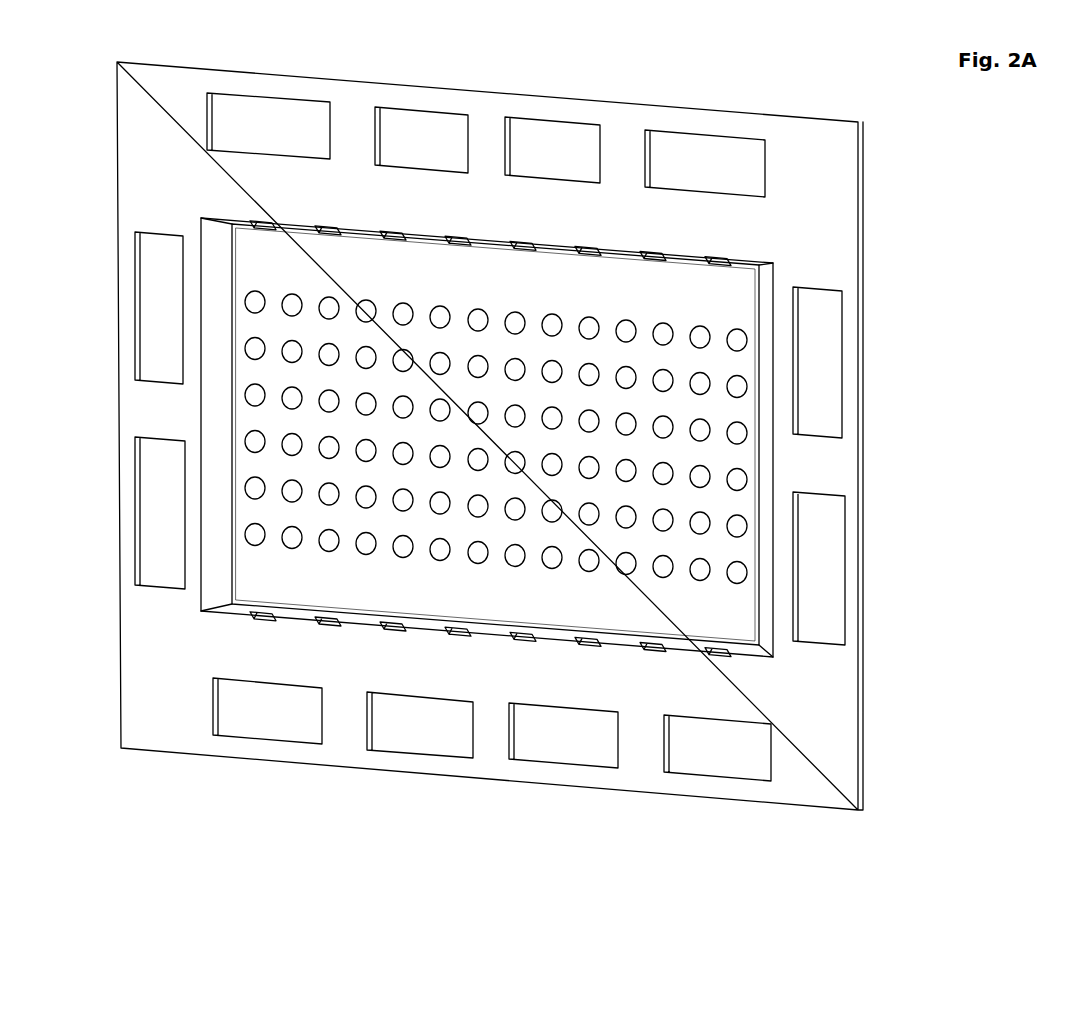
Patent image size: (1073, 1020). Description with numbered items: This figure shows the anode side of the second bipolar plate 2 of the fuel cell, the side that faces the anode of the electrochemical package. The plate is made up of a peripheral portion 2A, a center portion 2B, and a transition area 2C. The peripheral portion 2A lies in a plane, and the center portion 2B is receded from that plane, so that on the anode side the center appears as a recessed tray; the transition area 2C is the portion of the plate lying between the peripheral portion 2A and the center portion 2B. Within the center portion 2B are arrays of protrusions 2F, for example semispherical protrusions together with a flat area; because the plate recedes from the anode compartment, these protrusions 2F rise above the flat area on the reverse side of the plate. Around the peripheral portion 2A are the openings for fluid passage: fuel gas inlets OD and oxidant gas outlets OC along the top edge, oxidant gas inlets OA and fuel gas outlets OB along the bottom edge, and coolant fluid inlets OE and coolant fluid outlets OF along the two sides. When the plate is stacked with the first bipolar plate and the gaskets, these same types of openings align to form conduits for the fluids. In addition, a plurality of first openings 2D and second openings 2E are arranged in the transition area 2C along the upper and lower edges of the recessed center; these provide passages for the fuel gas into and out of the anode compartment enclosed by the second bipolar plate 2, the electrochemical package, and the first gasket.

The second bipolar plate 2 is at (860, 147).
The peripheral portion 2A is at (833, 281).
The center portion 2B is at (735, 313).
The transition area 2C is at (766, 464).
The first openings 2D is at (392, 238).
The second openings 2E is at (393, 630).
The protrusions 2F is at (626, 330).
The oxidant gas inlets OA is at (268, 725).
The fuel gas outlets OB is at (425, 740).
The oxidant gas outlets OC is at (288, 125).
The fuel gas inlets OD is at (425, 140).
The coolant fluid inlets OE is at (165, 527).
The coolant fluid outlets OF is at (165, 321).